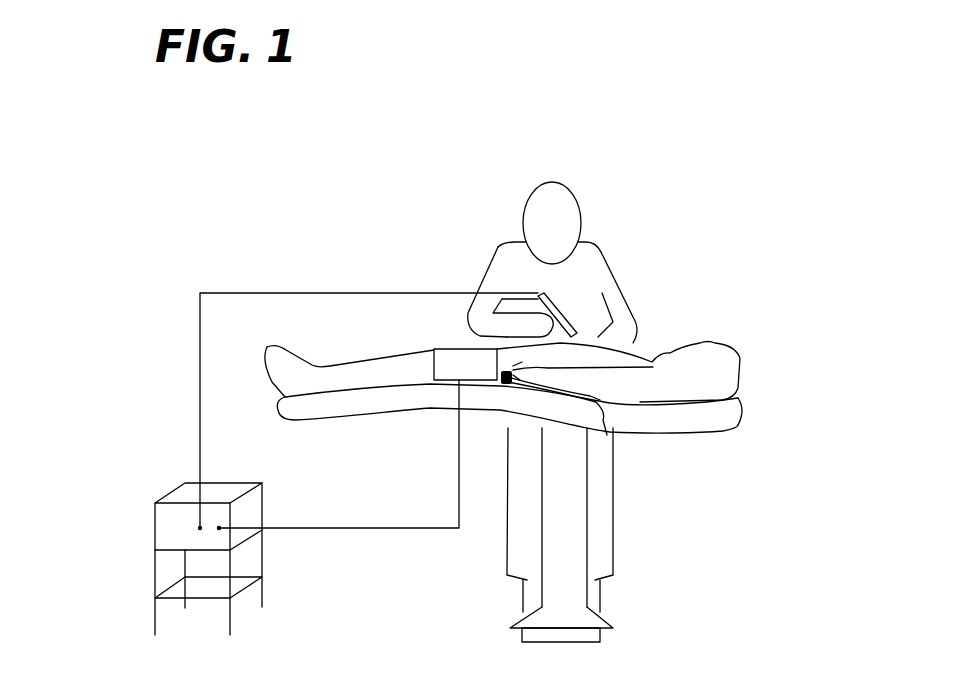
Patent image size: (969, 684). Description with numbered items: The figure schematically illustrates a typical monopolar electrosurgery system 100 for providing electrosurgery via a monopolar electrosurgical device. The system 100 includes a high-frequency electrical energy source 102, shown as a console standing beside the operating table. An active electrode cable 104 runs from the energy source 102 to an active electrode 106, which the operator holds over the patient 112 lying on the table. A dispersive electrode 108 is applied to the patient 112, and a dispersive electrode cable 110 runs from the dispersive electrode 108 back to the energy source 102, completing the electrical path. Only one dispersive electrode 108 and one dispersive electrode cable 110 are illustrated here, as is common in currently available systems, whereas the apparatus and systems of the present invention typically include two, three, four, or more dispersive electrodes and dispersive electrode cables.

The monopolar electrosurgery system 100 is at (473, 186).
The high-frequency electrical energy source 102 is at (131, 532).
The active electrode cable 104 is at (310, 282).
The active electrode 106 is at (568, 306).
The dispersive electrode 108 is at (612, 436).
The dispersive electrode cable 110 is at (353, 551).
The patient 112 is at (768, 359).